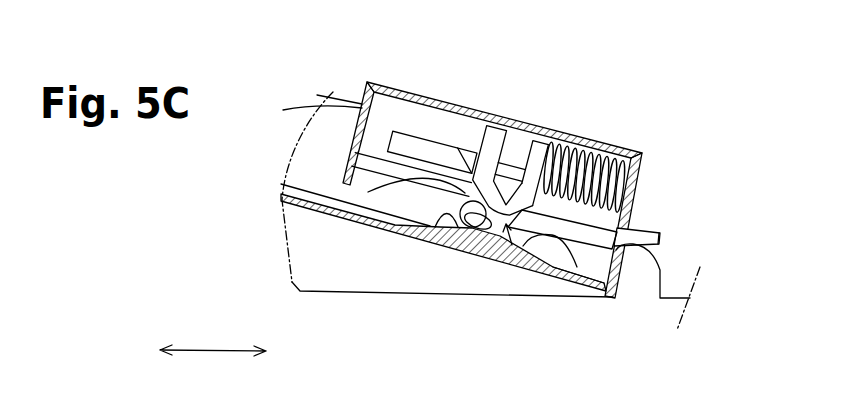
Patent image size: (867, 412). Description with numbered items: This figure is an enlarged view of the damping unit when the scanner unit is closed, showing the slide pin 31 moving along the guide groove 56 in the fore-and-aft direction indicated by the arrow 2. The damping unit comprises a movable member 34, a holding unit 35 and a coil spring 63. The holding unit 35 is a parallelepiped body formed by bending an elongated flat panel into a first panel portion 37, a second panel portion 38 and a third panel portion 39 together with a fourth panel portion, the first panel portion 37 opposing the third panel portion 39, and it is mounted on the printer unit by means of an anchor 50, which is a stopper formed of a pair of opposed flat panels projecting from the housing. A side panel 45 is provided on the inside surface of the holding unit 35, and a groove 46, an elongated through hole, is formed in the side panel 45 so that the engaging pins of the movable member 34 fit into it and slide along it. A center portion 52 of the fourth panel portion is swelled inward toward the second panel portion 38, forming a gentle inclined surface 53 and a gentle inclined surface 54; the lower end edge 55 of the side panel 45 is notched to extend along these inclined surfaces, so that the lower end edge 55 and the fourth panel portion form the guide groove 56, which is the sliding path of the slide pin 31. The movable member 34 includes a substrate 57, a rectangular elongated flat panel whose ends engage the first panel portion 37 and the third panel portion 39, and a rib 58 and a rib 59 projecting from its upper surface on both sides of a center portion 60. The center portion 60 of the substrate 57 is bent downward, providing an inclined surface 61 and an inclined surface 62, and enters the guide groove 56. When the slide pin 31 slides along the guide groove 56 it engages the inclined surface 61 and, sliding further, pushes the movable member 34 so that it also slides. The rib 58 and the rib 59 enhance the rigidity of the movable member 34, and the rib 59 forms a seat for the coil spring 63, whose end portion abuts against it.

The arrow 2 is at (205, 348).
The slide pin 31 is at (368, 192).
The movable member 34 is at (675, 243).
The holding unit 35 is at (336, 76).
The first panel portion 37 is at (343, 111).
The second panel portion 38 is at (426, 104).
The third panel portion 39 is at (641, 175).
The side panel 45 is at (400, 94).
The groove 46 is at (428, 142).
The anchor 50 is at (643, 307).
The center portion 52 is at (482, 240).
The inclined surface 53 is at (434, 205).
The inclined surface 54 is at (552, 268).
The lower end edge 55 is at (455, 206).
The guide groove 56 is at (388, 212).
The substrate 57 is at (650, 218).
The rib 58 is at (493, 128).
The rib 59 is at (542, 142).
The center portion 60 is at (519, 250).
The inclined surface 61 is at (462, 227).
The inclined surface 62 is at (577, 270).
The coil spring 63 is at (585, 143).